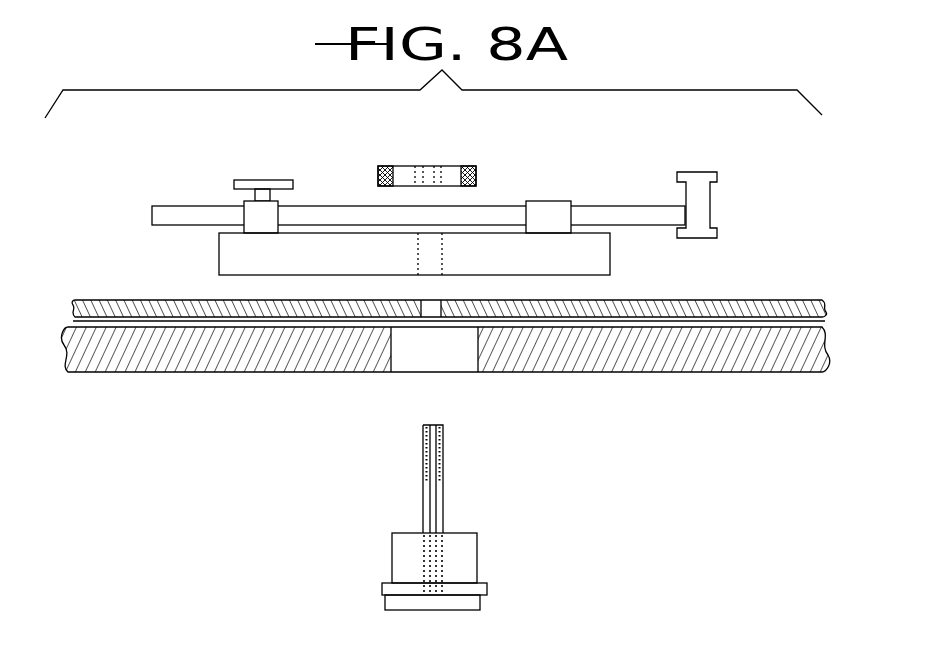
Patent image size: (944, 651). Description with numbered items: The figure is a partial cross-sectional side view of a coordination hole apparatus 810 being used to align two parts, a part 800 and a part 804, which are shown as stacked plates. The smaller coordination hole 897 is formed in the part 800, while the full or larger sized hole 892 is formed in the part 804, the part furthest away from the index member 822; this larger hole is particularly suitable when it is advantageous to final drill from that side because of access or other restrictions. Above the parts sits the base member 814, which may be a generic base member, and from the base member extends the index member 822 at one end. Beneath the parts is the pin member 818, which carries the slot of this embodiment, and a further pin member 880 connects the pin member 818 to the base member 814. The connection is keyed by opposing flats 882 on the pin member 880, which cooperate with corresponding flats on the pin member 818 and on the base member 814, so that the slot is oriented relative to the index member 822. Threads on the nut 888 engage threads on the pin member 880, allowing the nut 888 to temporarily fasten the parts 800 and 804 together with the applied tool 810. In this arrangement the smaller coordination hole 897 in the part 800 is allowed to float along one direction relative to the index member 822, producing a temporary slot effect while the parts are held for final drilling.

The part 800 is at (729, 306).
The part 804 is at (716, 353).
The coordination hole apparatus 810 is at (193, 197).
The base member 814 is at (610, 243).
The pin member 818 is at (391, 532).
The index member 822 is at (710, 206).
The pin member 880 is at (443, 458).
The opposing flats 882 is at (433, 503).
The nut 888 is at (400, 166).
The full or larger sized hole 892 is at (392, 352).
The smaller coordination hole 897 is at (428, 300).